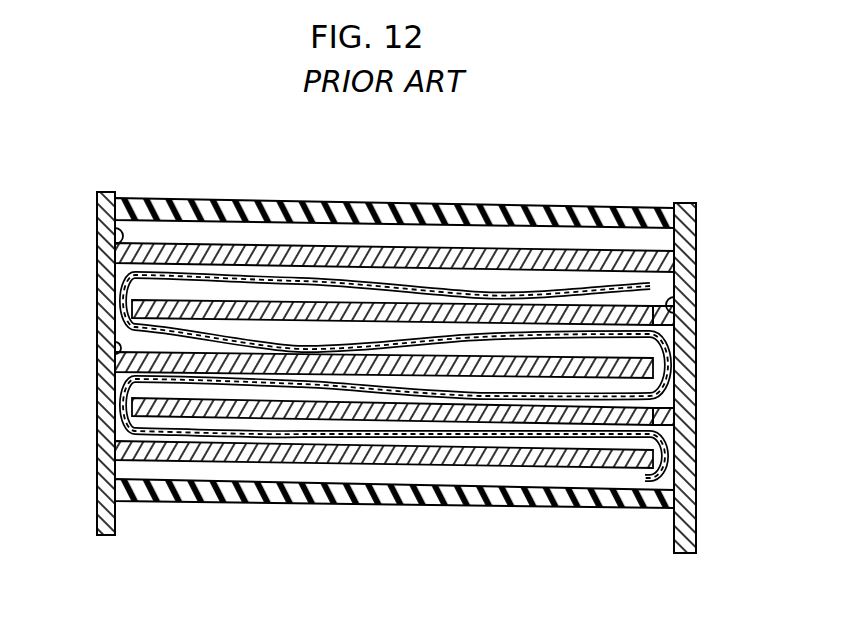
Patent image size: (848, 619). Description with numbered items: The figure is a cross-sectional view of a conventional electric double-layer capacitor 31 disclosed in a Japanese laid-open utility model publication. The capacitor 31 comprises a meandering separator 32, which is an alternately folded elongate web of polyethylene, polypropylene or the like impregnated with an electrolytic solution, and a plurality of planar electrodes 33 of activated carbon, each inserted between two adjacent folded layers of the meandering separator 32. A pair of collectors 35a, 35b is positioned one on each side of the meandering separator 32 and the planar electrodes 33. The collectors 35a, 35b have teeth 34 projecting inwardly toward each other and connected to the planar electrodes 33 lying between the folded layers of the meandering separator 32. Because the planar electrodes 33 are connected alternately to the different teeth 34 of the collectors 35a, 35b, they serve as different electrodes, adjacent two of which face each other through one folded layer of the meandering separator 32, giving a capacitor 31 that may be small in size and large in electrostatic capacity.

The electric double-layer capacitor 31 is at (516, 163).
The meandering separator 32 is at (668, 348).
The planar electrodes 33 is at (572, 252).
The teeth 34 is at (118, 229).
The collector 35a is at (697, 253).
The collector 35b is at (100, 287).